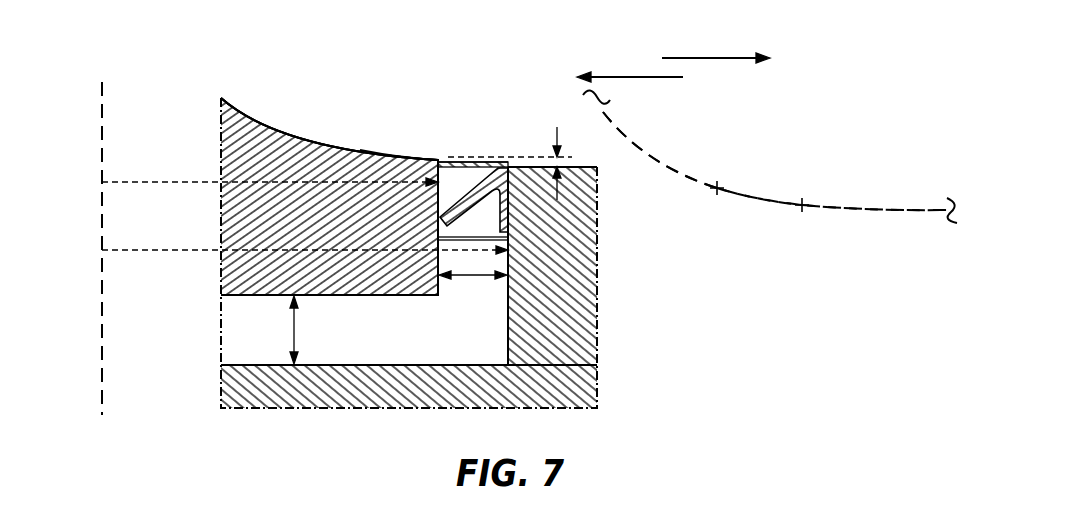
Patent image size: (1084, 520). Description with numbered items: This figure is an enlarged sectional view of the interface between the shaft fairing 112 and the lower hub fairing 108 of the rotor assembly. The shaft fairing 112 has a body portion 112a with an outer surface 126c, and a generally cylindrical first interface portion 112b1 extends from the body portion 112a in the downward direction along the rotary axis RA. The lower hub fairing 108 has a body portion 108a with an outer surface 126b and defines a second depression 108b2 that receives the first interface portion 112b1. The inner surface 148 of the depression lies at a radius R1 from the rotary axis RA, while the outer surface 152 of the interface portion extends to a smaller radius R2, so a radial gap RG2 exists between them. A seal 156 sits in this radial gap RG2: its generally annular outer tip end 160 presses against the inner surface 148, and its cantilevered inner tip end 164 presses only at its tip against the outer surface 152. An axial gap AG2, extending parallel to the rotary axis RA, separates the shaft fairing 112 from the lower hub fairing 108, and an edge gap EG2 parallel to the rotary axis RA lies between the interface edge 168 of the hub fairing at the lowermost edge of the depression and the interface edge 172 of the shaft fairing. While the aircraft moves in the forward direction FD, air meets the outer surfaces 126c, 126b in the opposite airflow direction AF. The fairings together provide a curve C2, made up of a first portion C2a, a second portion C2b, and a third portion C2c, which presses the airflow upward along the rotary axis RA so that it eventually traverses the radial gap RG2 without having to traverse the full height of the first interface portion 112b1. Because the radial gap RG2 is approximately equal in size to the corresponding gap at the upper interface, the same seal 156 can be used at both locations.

The shaft fairing 112 is at (329, 196).
The body portion 112a is at (292, 138).
The first interface portion 112b1 is at (240, 273).
The outer surface 126c is at (405, 158).
The interface edge 172 is at (442, 214).
The inner tip end 164 is at (462, 162).
The interface edge 168 is at (512, 166).
The seal 156 is at (483, 162).
The outer surface 126b is at (583, 171).
The outer tip end 160 is at (510, 232).
The second depression 108b2 is at (518, 263).
The lower hub fairing 108 is at (409, 287).
The inner surface 148 is at (503, 326).
The body portion 108a is at (375, 385).
The outer surface 152 is at (440, 292).
The rotary axis RA is at (100, 118).
The radius R1 is at (143, 182).
The radius R2 is at (147, 250).
The curve C2 is at (330, 145).
The first portion of the curve C2a is at (860, 209).
The second portion of the curve C2b is at (767, 196).
The third portion of the curve C2c is at (680, 173).
The edge gap EG2 is at (510, 149).
The axial gap AG2 is at (296, 331).
The radial gap RG2 is at (477, 282).
The forward direction FD is at (727, 58).
The airflow direction AF is at (624, 82).